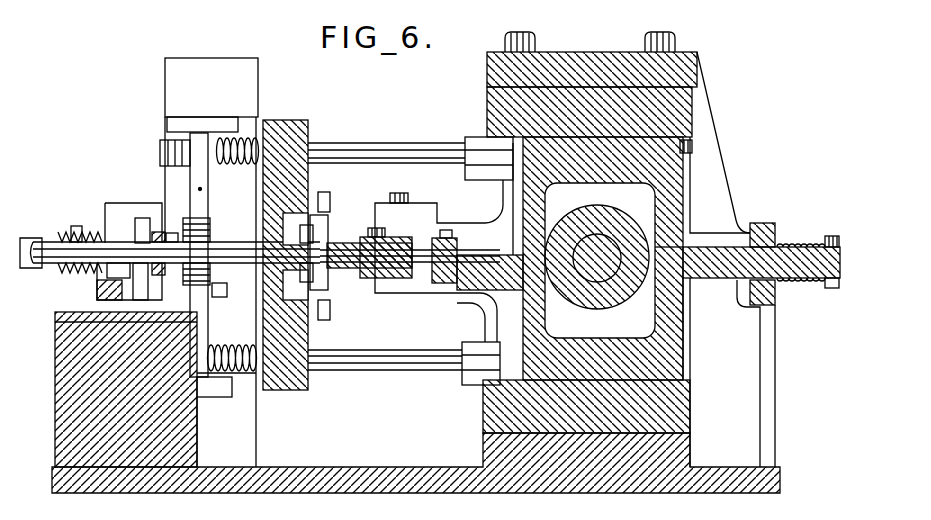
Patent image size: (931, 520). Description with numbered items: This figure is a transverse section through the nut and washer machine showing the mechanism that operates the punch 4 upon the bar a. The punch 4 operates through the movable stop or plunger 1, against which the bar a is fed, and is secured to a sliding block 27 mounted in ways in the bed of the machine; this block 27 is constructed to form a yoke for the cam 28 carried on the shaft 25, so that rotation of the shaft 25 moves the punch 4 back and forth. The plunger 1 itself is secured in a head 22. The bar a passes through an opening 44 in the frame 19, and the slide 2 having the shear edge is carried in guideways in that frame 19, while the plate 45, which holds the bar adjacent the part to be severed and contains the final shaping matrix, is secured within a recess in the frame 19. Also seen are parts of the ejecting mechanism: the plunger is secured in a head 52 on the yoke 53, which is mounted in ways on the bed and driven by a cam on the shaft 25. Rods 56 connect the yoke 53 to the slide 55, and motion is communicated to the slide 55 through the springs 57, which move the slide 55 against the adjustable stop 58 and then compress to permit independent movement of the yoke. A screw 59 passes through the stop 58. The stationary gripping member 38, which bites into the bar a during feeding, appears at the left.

The screw 59 is at (48, 242).
The stationary gripping member 38 is at (138, 230).
The adjustable stop 58 is at (172, 240).
The slide 55 is at (193, 185).
The springs 57 is at (260, 158).
The bar a is at (235, 248).
The opening 44 is at (257, 283).
The frame 19 is at (298, 121).
The plate 45 is at (296, 227).
The slide 2 is at (326, 277).
The movable stop 1 is at (343, 248).
The head 22 is at (369, 283).
The punch 4 is at (419, 255).
The head 52 is at (432, 212).
The rods 56 is at (385, 150).
The yoke 53 is at (505, 319).
The sliding block 27 is at (660, 346).
The cam 28 is at (563, 304).
The shaft 25 is at (610, 283).